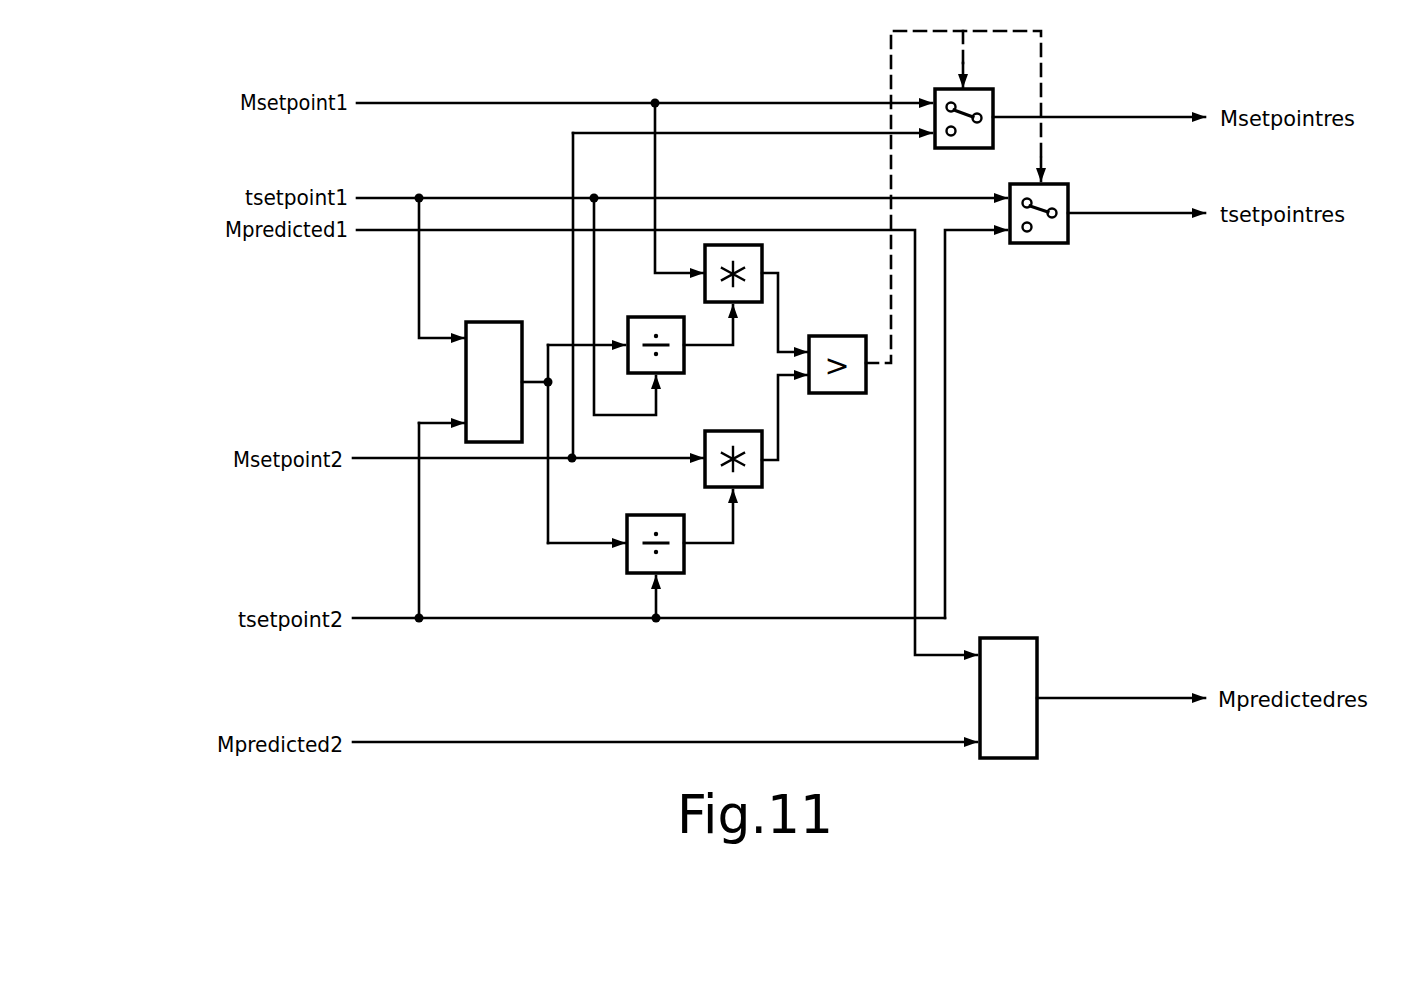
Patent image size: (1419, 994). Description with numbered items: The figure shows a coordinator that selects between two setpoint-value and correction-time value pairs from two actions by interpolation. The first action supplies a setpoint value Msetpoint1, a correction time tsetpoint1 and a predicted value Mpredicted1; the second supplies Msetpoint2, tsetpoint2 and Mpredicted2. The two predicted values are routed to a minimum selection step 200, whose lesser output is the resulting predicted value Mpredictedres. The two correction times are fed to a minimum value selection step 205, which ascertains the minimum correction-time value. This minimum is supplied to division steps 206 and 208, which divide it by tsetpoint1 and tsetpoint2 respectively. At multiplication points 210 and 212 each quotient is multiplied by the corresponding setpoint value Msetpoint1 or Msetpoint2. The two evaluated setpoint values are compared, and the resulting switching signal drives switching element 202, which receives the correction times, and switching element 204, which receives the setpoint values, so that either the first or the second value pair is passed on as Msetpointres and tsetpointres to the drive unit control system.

The minimum selection step 200 is at (1030, 655).
The switching element 202 is at (1048, 243).
The switching element 204 is at (980, 97).
The minimum value selection step 205 is at (466, 378).
The division step 206 is at (684, 362).
The division step 208 is at (644, 515).
The multiplication point 210 is at (762, 255).
The multiplication point 212 is at (762, 477).